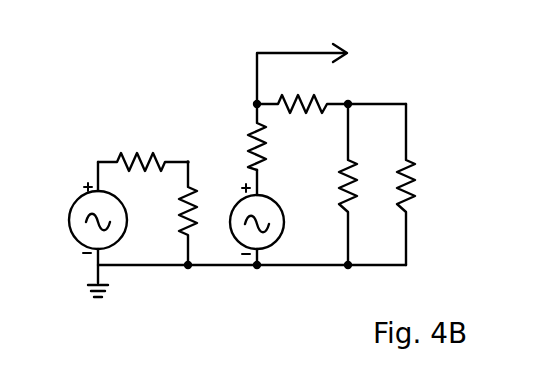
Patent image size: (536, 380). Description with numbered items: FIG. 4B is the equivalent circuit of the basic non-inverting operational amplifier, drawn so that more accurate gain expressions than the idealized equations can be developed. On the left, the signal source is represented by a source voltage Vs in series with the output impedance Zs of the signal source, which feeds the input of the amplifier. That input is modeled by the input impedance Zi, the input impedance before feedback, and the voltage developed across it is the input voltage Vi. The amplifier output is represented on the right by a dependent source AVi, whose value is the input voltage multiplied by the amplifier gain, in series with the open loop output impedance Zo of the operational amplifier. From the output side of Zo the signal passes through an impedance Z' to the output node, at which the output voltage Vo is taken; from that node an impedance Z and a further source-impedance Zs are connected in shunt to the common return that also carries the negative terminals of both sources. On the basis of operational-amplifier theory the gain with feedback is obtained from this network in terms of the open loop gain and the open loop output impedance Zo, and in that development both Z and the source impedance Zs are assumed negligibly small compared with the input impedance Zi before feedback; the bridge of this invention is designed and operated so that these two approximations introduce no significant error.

The source voltage Vs is at (98, 222).
The output impedance of the signal source Zs is at (266, 184).
The input impedance Zi is at (195, 213).
The input voltage Vi is at (196, 155).
The dependent voltage source (gain A times Vi) AVi is at (264, 217).
The open loop output impedance Zo is at (246, 132).
The series impedance Z' is at (302, 89).
The output voltage Vo is at (309, 64).
The impedance Z is at (352, 184).